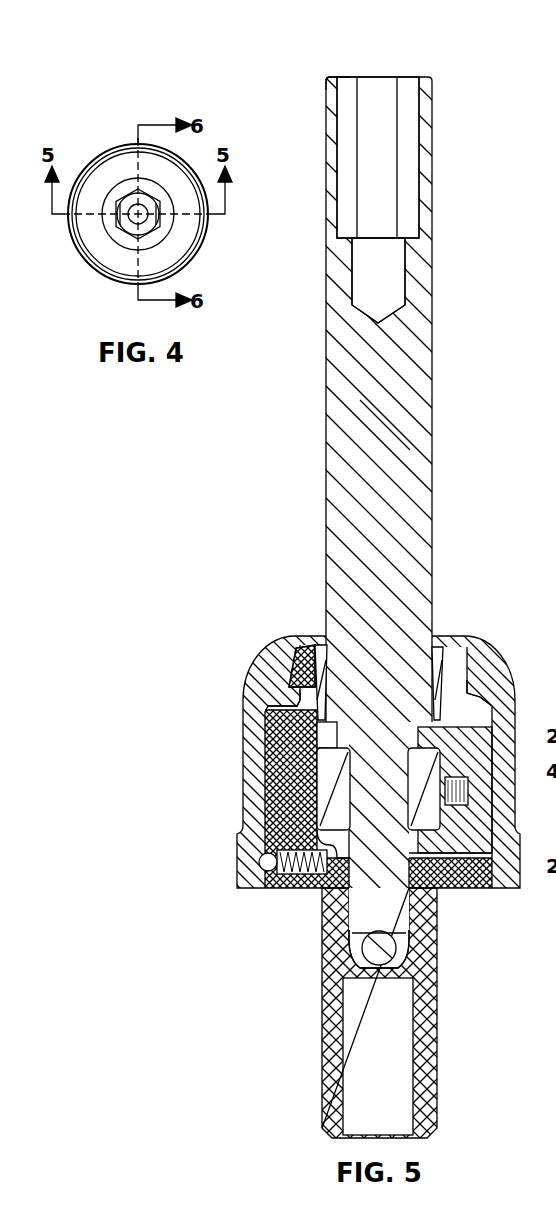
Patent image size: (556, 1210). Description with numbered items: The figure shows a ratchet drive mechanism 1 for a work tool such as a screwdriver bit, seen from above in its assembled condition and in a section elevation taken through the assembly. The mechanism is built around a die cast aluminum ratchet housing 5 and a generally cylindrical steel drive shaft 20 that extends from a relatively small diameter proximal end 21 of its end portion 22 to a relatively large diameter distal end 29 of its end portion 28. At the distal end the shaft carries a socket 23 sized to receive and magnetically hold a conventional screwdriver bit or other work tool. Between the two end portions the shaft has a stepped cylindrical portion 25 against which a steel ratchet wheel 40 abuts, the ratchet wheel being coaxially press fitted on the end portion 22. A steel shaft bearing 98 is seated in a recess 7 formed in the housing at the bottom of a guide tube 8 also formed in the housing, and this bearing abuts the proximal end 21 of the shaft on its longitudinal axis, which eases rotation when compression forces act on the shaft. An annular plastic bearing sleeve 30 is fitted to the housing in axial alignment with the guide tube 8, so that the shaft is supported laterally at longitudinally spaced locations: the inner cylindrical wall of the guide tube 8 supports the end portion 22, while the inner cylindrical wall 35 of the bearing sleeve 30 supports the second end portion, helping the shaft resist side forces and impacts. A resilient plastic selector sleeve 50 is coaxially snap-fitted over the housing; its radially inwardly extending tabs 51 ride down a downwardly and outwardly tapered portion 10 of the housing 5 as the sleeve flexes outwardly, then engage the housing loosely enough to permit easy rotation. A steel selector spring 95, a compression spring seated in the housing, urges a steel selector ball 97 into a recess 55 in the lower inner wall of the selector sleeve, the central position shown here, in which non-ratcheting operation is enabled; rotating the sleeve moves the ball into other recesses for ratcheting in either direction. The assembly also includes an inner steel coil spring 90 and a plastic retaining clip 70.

The ratchet drive mechanism 1 is at (466, 104).
The ratchet housing 5 is at (312, 998).
The recess 7 is at (400, 940).
The guide tube 8 is at (352, 936).
The tapered portion 10 is at (293, 683).
The drive shaft 20 is at (326, 348).
The proximal end 21 is at (365, 930).
The end portion 22 is at (358, 803).
The socket 23 is at (378, 95).
The stepped cylindrical portion 25 is at (343, 737).
The end portion 28 is at (358, 438).
The distal end 29 is at (333, 76).
The bearing sleeve 30 is at (443, 665).
The inner cylindrical wall 35 is at (328, 690).
The ratchet wheel 40 is at (327, 772).
The selector sleeve 50 is at (240, 664).
The tabs 51 is at (283, 702).
The recess 55 is at (263, 884).
The retaining clip 70 is at (474, 822).
The inner coil spring 90 is at (468, 790).
The selector spring 95 is at (302, 875).
The selector ball 97 is at (262, 860).
The shaft bearing 98 is at (392, 950).